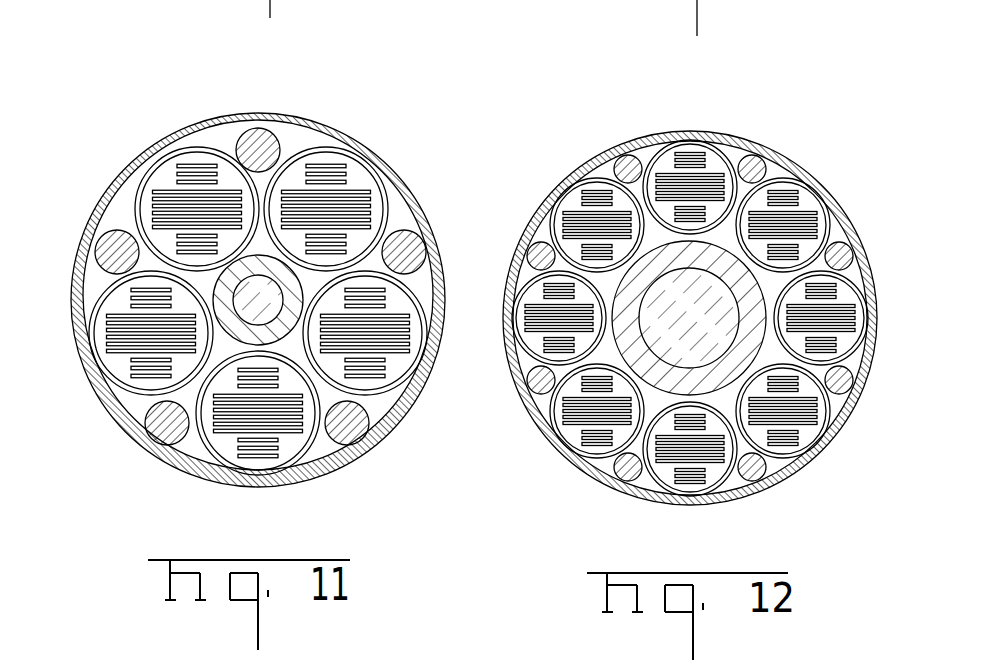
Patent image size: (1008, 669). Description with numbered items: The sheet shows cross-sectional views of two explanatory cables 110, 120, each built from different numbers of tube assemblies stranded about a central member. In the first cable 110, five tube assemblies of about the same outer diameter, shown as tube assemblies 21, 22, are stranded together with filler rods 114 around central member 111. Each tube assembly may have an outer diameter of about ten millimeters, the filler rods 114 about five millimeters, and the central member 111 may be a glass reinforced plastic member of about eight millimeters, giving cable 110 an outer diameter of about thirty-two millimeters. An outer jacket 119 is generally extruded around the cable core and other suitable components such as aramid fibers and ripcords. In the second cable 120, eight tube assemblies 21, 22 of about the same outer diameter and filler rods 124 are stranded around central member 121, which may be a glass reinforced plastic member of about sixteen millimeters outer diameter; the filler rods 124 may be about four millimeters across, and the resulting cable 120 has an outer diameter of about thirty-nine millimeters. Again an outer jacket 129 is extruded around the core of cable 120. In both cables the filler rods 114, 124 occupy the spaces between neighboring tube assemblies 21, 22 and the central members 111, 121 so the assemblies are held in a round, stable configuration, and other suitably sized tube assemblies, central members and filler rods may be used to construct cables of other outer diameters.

In FIG. 11, the cable 110 is at (276, 275).
In FIG. 11, the buffer tube with optical fiber ribbons 21 is at (201, 150).
In FIG. 12, the buffer tube with optical fiber ribbons 21 is at (603, 180).
In FIG. 11, the buffer tube with optical fiber ribbons 22 is at (355, 182).
In FIG. 12, the buffer tube with optical fiber ribbons 22 is at (800, 205).
In FIG. 11, the central member 111 is at (292, 332).
In FIG. 11, the filler rods 114 is at (167, 428).
In FIG. 11, the outer jacket 119 is at (323, 477).
In FIG. 12, the cable 120 is at (694, 293).
In FIG. 12, the central member 121 is at (762, 340).
In FIG. 12, the filler rods 124 is at (615, 477).
In FIG. 12, the outer jacket 129 is at (752, 492).